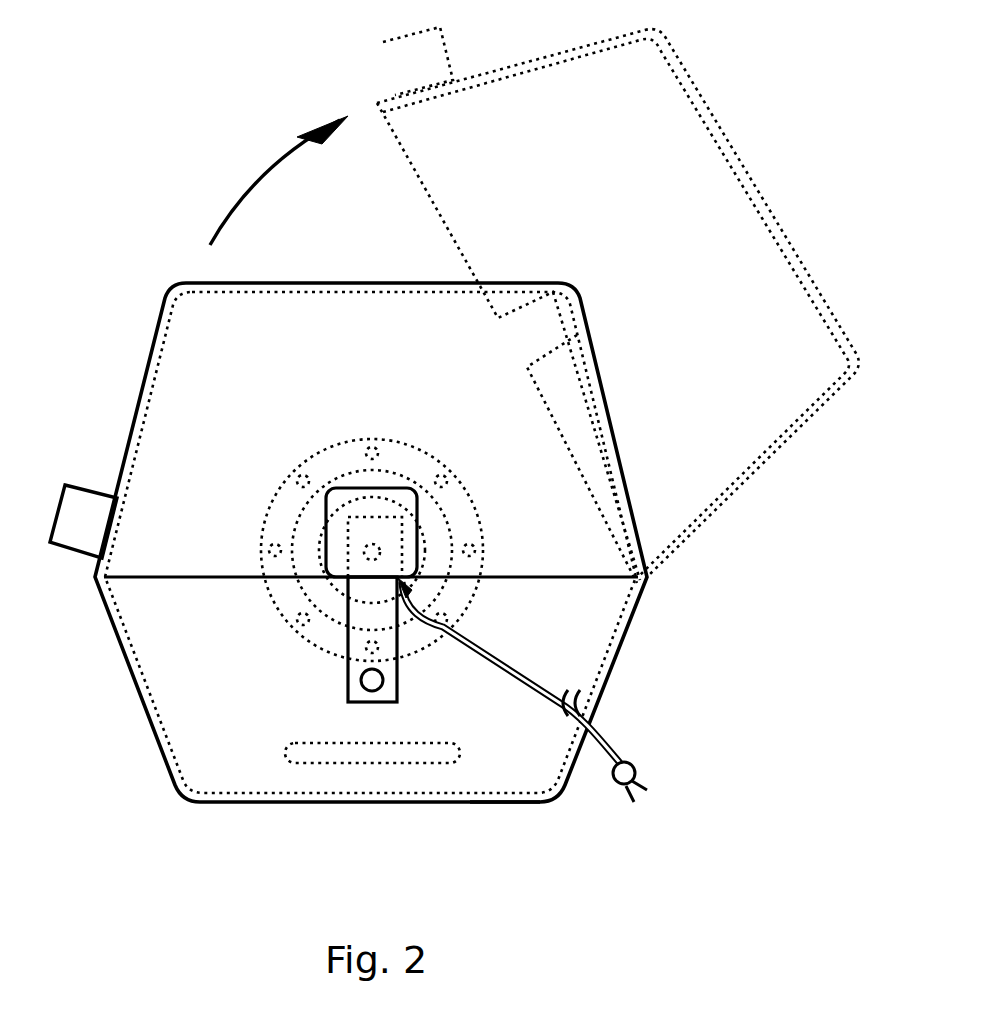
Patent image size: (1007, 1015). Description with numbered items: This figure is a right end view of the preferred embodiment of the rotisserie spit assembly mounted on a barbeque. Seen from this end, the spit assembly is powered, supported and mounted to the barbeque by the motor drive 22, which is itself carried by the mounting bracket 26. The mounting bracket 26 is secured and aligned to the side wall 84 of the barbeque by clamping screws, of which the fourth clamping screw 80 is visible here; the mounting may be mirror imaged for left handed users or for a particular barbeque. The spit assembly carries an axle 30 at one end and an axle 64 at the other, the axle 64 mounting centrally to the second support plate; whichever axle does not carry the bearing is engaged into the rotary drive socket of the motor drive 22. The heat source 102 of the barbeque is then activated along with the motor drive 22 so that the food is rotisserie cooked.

The axle 30 is at (275, 607).
The motor drive 22 is at (340, 545).
The axle 64 is at (370, 558).
The mounting bracket 26 is at (356, 698).
The fourth clamping screw 80 is at (371, 690).
The heat source 102 is at (385, 757).
The side wall 84 is at (490, 745).